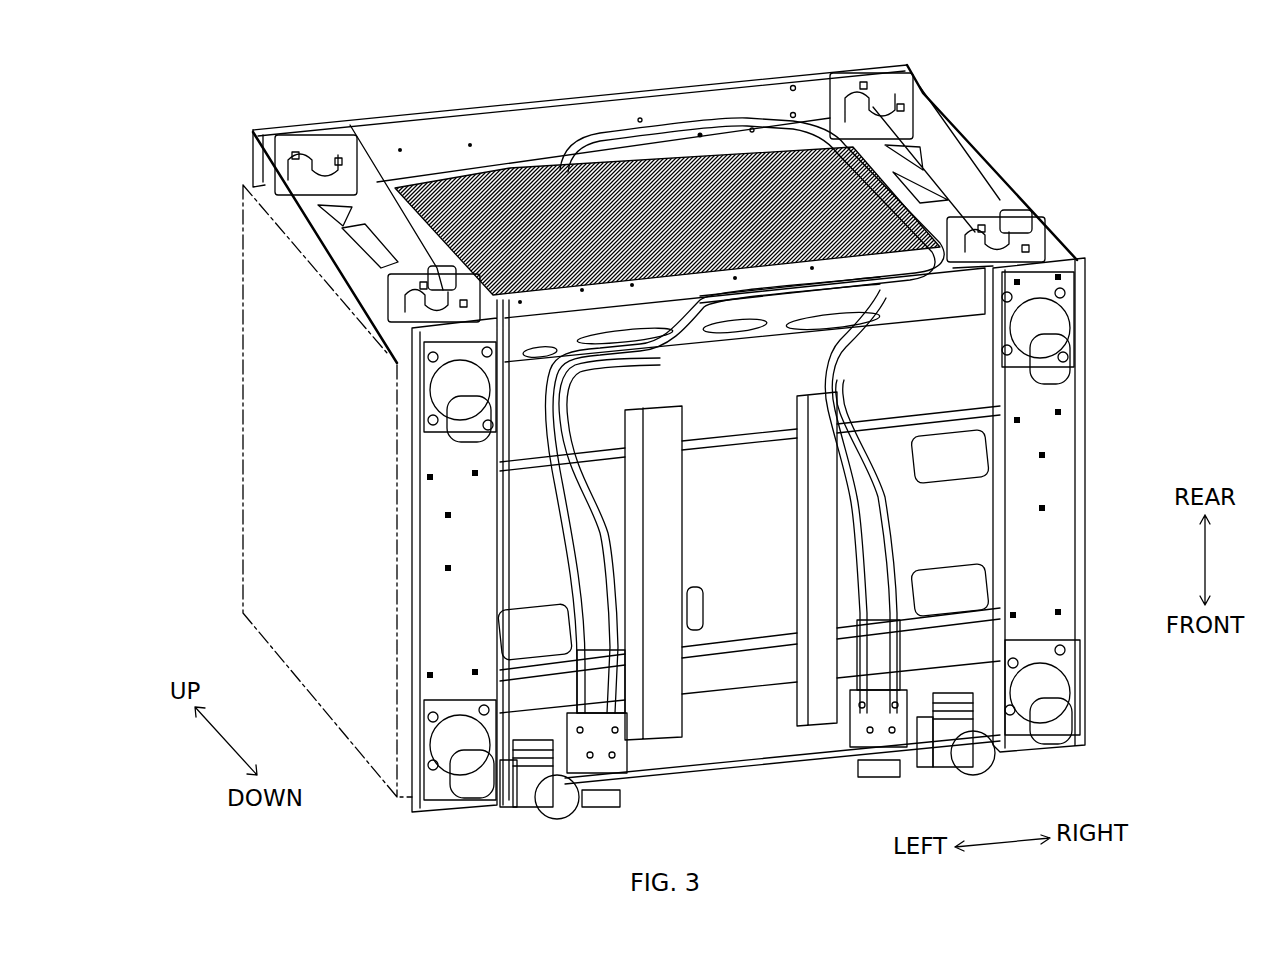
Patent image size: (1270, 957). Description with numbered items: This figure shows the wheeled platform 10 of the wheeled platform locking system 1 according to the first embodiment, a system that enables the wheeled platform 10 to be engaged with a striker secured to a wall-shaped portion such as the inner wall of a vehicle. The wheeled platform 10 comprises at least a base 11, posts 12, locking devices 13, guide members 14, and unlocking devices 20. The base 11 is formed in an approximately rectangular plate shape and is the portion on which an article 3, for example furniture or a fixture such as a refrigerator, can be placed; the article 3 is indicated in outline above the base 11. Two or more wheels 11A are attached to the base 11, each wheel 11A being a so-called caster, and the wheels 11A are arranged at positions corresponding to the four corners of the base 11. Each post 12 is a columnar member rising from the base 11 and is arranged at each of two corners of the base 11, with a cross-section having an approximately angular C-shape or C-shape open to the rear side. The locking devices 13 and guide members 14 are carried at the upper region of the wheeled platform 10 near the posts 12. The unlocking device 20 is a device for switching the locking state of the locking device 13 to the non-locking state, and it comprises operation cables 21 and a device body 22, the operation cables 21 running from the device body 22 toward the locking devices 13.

The wheeled platform locking system 1 is at (661, 451).
The article 3 is at (243, 397).
The wheeled platform 10 is at (665, 454).
The base 11 is at (753, 747).
The wheel 11A is at (1052, 367).
The post 12 is at (963, 158).
The locking device 13 is at (300, 150).
The guide member 14 is at (1010, 212).
The unlocking device 20 is at (610, 819).
The operation cable 21 is at (600, 530).
The device body 22 is at (636, 761).